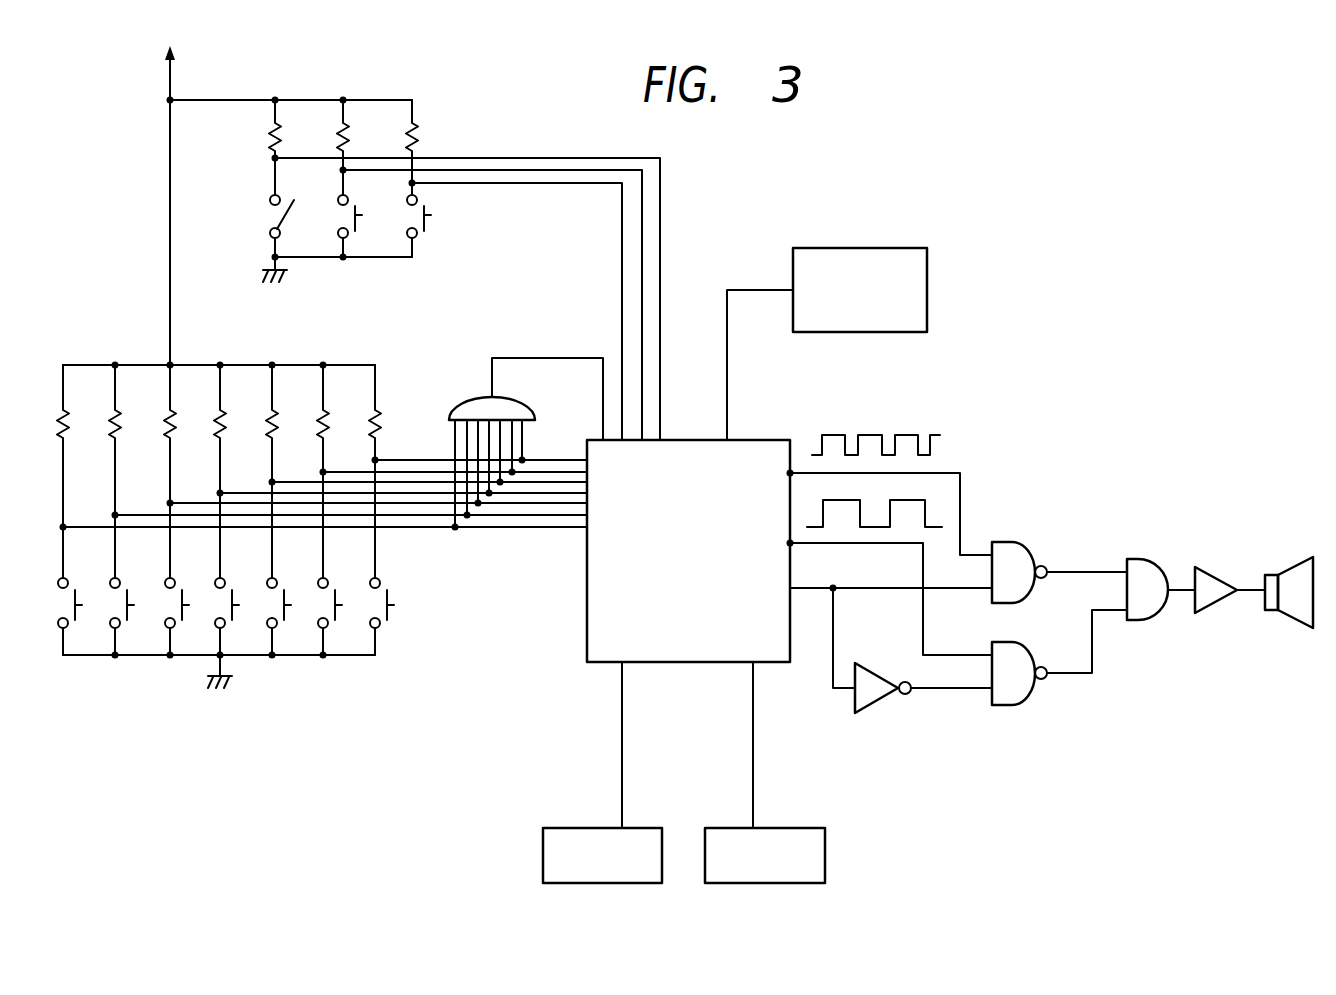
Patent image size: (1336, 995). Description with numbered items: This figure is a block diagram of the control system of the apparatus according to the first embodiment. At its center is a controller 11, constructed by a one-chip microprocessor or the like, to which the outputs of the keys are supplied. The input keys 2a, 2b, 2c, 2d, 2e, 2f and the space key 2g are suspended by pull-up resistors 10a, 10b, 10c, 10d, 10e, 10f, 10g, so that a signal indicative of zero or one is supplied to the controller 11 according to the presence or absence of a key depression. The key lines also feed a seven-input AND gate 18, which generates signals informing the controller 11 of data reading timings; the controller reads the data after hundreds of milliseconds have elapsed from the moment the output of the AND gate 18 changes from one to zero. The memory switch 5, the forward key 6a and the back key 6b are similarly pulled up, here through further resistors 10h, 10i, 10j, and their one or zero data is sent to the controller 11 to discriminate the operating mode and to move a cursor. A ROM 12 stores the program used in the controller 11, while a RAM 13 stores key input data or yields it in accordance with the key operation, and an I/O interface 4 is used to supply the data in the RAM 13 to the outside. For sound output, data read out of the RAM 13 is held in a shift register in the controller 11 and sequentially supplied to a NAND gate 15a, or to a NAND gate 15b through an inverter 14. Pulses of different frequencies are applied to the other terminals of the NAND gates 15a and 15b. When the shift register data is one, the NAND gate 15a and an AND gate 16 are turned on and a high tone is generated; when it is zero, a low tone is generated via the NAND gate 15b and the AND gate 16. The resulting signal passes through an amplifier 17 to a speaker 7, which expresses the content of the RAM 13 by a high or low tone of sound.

The input key 2a is at (86, 578).
The input key 2b is at (138, 578).
The input key 2c is at (192, 578).
The input key 2d is at (243, 578).
The input key 2e is at (295, 578).
The input key 2f is at (344, 578).
The space key 2g is at (395, 606).
The I/O interface 4 is at (908, 248).
The memory switch 5 is at (268, 215).
The forward key 6a is at (360, 241).
The back key 6b is at (429, 241).
The speaker 7 is at (1286, 563).
The pull-up resistor 10a is at (84, 418).
The pull-up resistor 10b is at (136, 418).
The pull-up resistor 10c is at (190, 418).
The pull-up resistor 10d is at (241, 418).
The pull-up resistor 10e is at (293, 418).
The pull-up resistor 10f is at (344, 418).
The pull-up resistor 10g is at (396, 418).
The pull-up resistor 10h is at (263, 142).
The pull-up resistor 10i is at (331, 142).
The pull-up resistor 10j is at (400, 142).
The controller 11 is at (587, 629).
The ROM 12 is at (565, 826).
The RAM 13 is at (715, 826).
The inverter 14 is at (878, 666).
The NAND gate 15a is at (1024, 535).
The NAND gate 15b is at (1028, 645).
The AND gate 16 is at (1153, 553).
The amplifier 17 is at (1223, 571).
The 7-input AND gate 18 is at (530, 400).